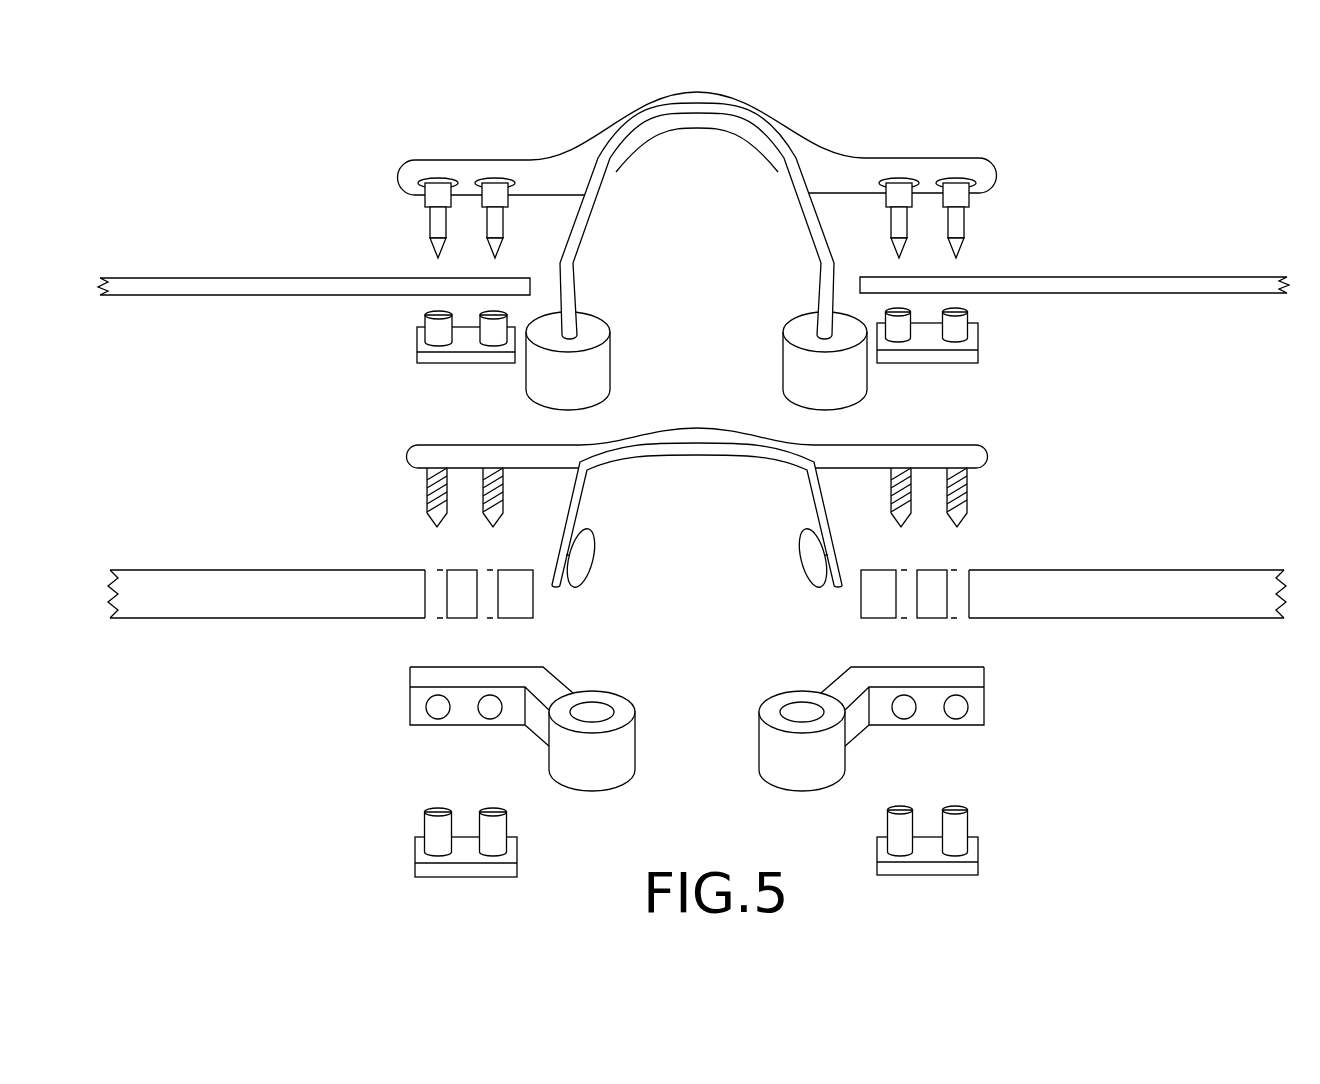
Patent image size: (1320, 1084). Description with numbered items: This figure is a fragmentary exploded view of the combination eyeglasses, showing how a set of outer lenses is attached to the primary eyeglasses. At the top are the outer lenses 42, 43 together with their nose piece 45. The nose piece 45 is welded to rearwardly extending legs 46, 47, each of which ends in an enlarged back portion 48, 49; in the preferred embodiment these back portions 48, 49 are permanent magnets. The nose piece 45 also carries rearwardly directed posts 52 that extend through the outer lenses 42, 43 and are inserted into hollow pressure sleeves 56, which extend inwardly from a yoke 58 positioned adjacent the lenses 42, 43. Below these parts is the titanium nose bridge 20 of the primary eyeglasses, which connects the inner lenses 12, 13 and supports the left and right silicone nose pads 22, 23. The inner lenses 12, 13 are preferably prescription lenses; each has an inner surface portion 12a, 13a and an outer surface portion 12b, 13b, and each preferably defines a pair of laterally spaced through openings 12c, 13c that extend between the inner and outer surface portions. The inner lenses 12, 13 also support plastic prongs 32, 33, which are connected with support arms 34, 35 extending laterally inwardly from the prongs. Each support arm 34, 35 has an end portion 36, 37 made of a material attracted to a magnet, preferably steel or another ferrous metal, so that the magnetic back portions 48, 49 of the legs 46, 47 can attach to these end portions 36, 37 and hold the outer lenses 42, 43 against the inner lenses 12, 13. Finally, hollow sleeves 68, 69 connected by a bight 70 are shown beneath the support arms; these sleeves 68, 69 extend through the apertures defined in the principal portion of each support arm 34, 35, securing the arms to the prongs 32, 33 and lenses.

The inner lens 12 is at (320, 597).
The inner surface portion 12a is at (212, 620).
The outer surface portion 12b is at (290, 570).
The through openings 12c is at (435, 608).
The inner lens 13 is at (1073, 594).
The inner surface portion 13a is at (1118, 618).
The outer surface portion 13b is at (1150, 567).
The through openings 13c is at (959, 608).
The nose bridge 20 is at (553, 453).
The nose pad 22 is at (580, 562).
The nose pad 23 is at (807, 563).
The prong 32 is at (456, 868).
The prong 33 is at (912, 872).
The support arm 34 is at (505, 724).
The support arm 35 is at (878, 725).
The end portion 36 is at (615, 757).
The end portion 37 is at (783, 750).
The outer lens 42 is at (218, 287).
The outer lens 43 is at (1128, 283).
The nose piece 45 is at (692, 98).
The leg 46 is at (580, 220).
The leg 47 is at (805, 203).
The back portion 48 is at (590, 323).
The back portion 49 is at (805, 322).
The posts 52 is at (438, 220).
The pressure sleeves 56 is at (423, 327).
The yoke 58 is at (405, 362).
The hollow sleeve 68 is at (437, 824).
The hollow sleeve 69 is at (495, 830).
The bight 70 is at (465, 855).